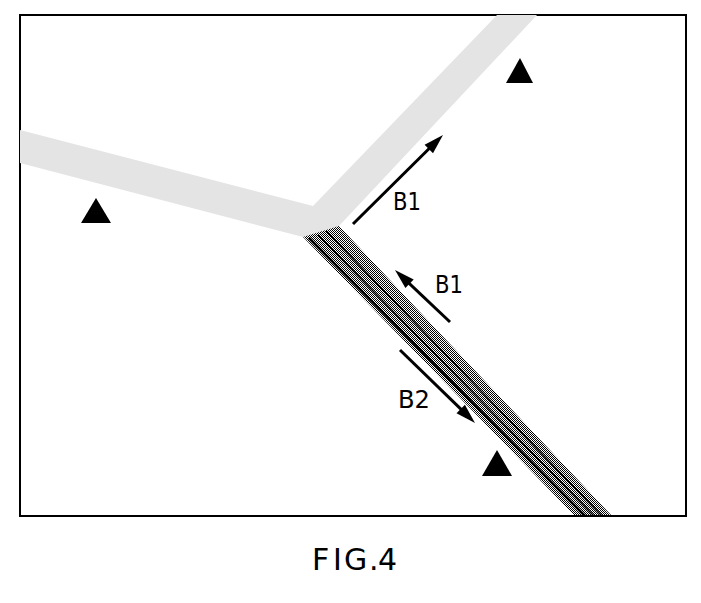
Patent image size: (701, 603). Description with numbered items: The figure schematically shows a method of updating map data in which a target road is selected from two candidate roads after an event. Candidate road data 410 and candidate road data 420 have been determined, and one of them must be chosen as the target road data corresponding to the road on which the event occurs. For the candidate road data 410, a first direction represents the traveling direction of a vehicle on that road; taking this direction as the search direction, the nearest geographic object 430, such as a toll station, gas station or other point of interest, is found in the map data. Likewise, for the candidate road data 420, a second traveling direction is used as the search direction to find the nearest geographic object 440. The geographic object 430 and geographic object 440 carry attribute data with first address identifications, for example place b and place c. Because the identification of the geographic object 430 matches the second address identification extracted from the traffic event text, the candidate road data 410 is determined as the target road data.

The candidate road data 410 is at (547, 452).
The candidate road data 420 is at (337, 254).
The geographic object 430 is at (523, 85).
The geographic object 440 is at (490, 478).